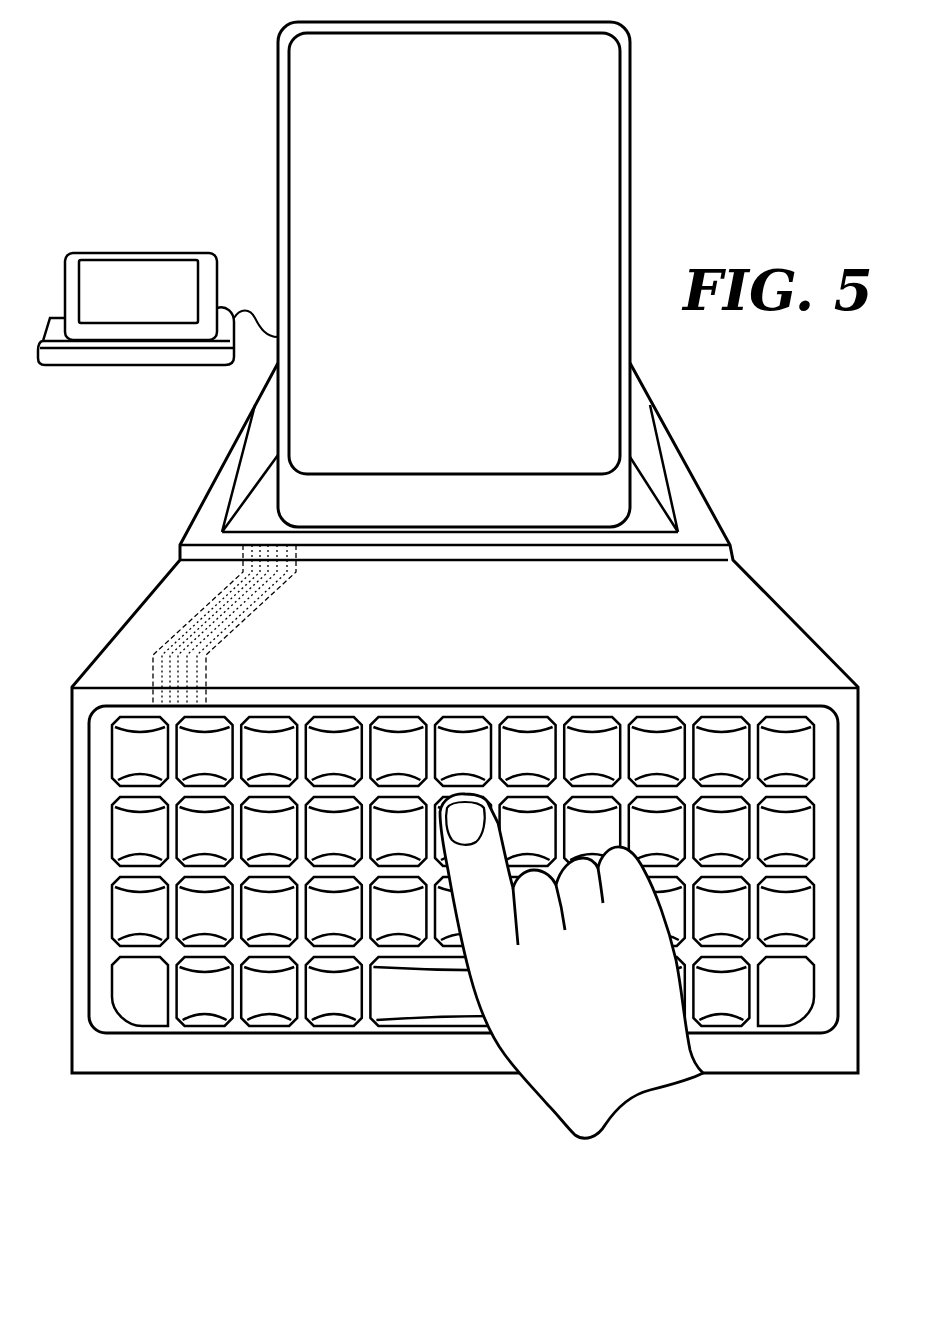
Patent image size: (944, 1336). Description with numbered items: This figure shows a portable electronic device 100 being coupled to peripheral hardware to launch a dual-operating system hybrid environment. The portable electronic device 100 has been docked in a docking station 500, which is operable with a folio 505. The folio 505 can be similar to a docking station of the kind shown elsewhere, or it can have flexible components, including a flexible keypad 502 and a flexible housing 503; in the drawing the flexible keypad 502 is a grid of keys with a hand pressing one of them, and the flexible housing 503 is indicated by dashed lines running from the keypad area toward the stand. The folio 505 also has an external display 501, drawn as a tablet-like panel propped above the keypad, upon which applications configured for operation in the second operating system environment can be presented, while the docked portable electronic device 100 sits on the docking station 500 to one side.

The portable electronic device 100 is at (142, 252).
The docking station 500 is at (138, 357).
The external display 501 is at (578, 173).
The flexible keypad 502 is at (195, 993).
The flexible housing 503 is at (147, 628).
The folio 505 is at (757, 534).